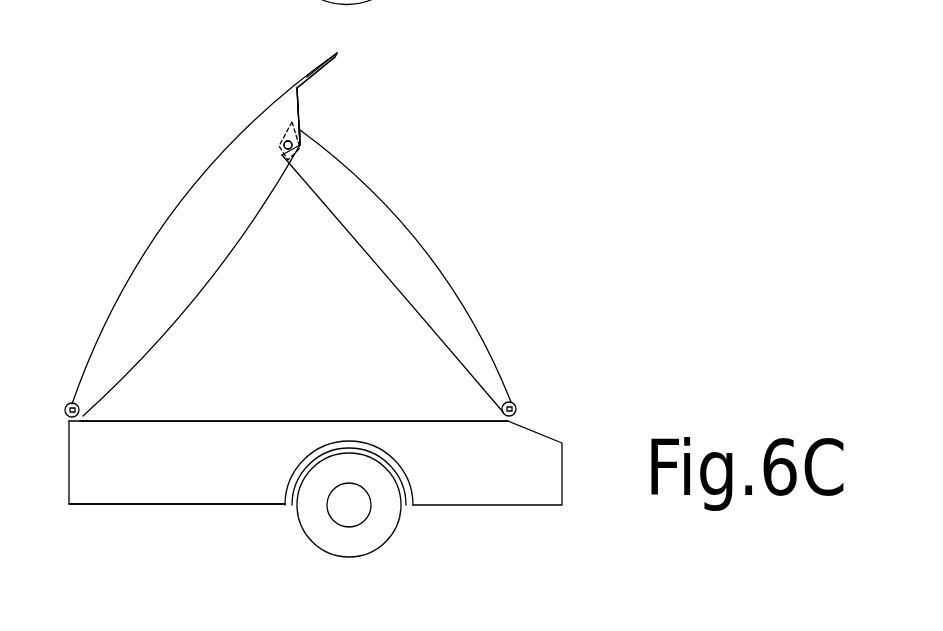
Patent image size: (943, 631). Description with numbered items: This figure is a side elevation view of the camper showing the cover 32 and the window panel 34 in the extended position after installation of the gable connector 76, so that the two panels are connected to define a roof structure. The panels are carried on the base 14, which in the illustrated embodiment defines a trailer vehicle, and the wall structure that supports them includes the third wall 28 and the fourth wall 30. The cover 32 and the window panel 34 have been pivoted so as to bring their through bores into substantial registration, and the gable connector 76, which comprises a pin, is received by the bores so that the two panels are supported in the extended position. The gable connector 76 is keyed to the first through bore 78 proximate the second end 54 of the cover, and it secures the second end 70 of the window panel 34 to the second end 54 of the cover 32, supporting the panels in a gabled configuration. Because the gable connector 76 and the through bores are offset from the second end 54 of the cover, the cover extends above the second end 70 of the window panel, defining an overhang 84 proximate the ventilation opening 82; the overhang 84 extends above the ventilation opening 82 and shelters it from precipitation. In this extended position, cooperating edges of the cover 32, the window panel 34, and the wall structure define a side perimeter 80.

The base 14 is at (473, 483).
The third wall 28 is at (175, 421).
The fourth wall 30 is at (207, 477).
The cover 32 is at (125, 283).
The window panel 34 is at (462, 308).
The second end of the cover 54 is at (337, 53).
The second end of the window panel 70 is at (305, 183).
The gable connector 76 is at (284, 142).
The first through bore 78 is at (300, 142).
The side perimeter 80 is at (372, 349).
The ventilation opening 82 is at (332, 100).
The overhang 84 is at (307, 70).